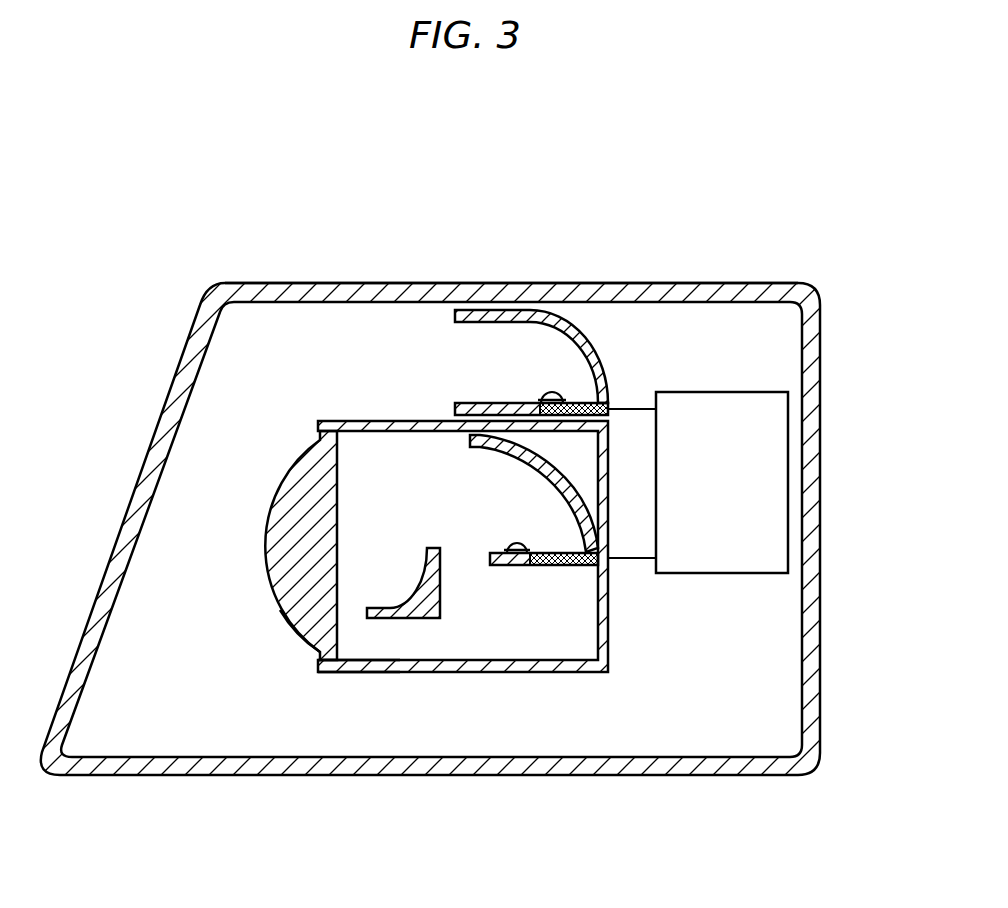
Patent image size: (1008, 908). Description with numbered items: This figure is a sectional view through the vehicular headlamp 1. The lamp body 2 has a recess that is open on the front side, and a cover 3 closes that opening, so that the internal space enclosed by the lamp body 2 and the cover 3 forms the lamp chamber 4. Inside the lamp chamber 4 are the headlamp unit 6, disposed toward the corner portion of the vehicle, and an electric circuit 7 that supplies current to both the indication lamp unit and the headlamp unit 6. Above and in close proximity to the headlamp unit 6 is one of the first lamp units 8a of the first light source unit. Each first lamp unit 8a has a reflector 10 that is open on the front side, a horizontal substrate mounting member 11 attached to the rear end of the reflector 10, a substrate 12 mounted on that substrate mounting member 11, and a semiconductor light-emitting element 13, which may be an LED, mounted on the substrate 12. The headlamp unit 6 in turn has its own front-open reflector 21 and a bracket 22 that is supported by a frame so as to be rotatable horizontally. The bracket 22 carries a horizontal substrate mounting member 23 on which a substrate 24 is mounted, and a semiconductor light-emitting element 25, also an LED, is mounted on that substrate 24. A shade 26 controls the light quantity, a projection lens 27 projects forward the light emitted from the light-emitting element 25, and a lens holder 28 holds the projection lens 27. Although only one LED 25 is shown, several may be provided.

The vehicular headlamp 1 is at (809, 206).
The lamp body 2 is at (650, 283).
The cover 3 is at (228, 283).
The lamp chamber 4 is at (97, 677).
The headlamp unit 6 is at (256, 541).
The electric circuit 7 is at (738, 393).
The first lamp unit 8a is at (459, 300).
The reflector 10 is at (536, 403).
The substrate mounting member 11 is at (480, 403).
The substrate 12 is at (552, 391).
The semiconductor light-emitting element 13 is at (590, 342).
The reflector 21 is at (478, 447).
The bracket 22 is at (612, 628).
The substrate mounting member 23 is at (538, 566).
The substrate 24 is at (505, 552).
The semiconductor light-emitting element 25 is at (517, 541).
The shade 26 is at (384, 618).
The projection lens 27 is at (277, 605).
The lens holder 28 is at (340, 674).